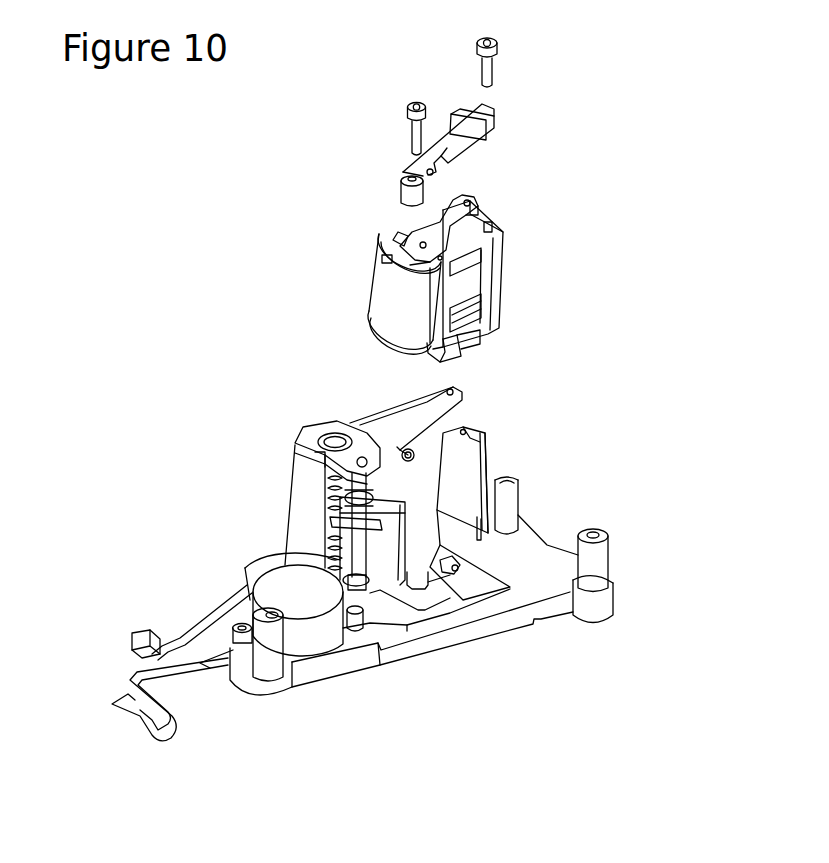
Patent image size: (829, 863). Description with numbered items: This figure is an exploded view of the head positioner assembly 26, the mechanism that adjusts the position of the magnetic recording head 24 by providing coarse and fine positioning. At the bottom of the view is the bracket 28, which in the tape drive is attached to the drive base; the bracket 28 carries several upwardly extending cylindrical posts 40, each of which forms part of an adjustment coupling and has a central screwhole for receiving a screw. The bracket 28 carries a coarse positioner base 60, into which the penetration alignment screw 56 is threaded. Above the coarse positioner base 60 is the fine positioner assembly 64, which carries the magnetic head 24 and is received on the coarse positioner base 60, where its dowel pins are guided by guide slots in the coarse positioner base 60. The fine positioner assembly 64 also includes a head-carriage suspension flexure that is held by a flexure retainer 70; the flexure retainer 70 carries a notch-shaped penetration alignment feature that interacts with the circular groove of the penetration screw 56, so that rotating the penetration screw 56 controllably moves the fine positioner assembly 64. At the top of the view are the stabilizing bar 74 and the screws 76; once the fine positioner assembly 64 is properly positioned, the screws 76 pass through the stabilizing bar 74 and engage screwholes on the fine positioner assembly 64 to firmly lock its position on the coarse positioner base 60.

The magnetic recording head 24 is at (497, 302).
The head positioner assembly 26 is at (160, 330).
The bracket 28 is at (505, 626).
The cylindrical post 40 is at (514, 497).
The penetration alignment screw 56 is at (452, 578).
The coarse positioner base 60 is at (480, 443).
The fine positioner assembly 64 is at (527, 255).
The flexure retainer 70 is at (460, 356).
The stabilizing bar 74 is at (402, 188).
The screws 76 is at (478, 65).